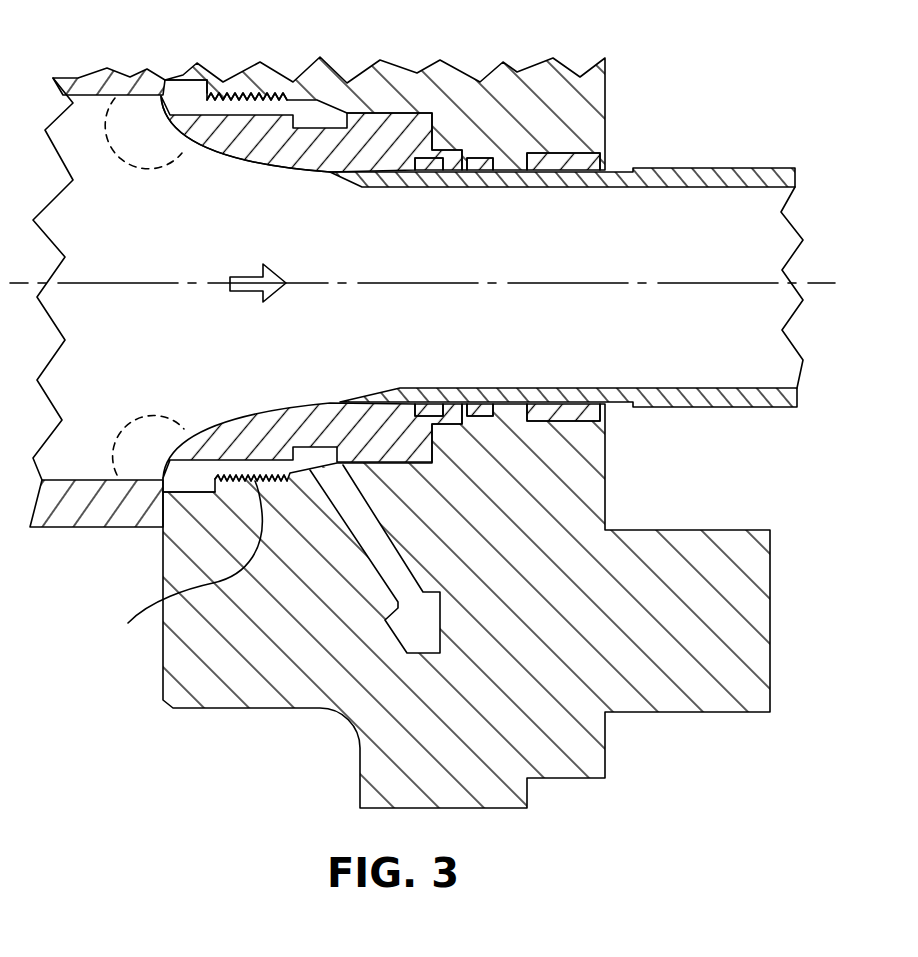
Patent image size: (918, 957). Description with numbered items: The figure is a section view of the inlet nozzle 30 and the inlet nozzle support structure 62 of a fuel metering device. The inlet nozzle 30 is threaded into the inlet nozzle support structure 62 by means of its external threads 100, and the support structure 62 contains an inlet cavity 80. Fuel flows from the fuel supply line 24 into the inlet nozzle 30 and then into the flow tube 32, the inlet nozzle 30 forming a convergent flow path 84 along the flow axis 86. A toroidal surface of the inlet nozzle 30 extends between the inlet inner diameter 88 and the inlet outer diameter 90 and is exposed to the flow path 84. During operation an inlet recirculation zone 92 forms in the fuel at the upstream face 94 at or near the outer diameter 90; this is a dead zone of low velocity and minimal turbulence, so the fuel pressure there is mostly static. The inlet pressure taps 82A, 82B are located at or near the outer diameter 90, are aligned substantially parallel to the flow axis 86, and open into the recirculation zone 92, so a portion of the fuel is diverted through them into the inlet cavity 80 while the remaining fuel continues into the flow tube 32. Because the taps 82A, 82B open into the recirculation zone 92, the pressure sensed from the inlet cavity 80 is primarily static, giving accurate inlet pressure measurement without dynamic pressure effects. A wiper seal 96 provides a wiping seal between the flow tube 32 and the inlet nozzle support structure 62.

The fuel supply line 24 is at (75, 527).
The inlet nozzle 30 is at (403, 133).
The flow tube 32 is at (713, 168).
The inlet nozzle support structure 62 is at (672, 697).
The inlet cavity 80 is at (347, 83).
The inlet pressure tap 82A is at (248, 100).
The inlet pressure tap 82B is at (188, 486).
The flow path 84 is at (247, 277).
The flow axis 86 is at (113, 283).
The inlet inner diameter 88 is at (302, 172).
The inlet outer diameter 90 is at (207, 80).
The inlet recirculation zone 92 is at (171, 286).
The upstream face 94 is at (163, 478).
The wiper seal 96 is at (433, 172).
The external threads 100 is at (182, 566).